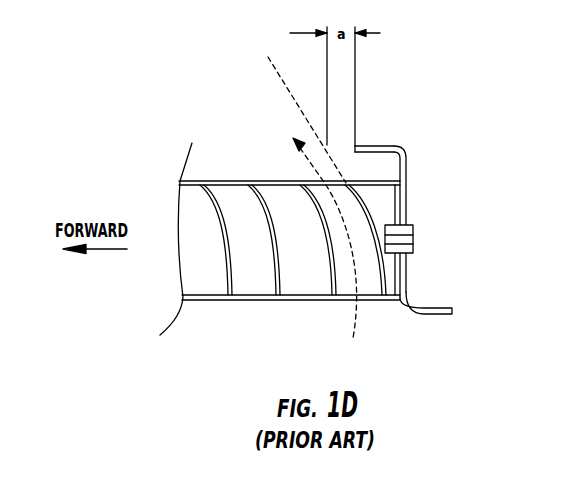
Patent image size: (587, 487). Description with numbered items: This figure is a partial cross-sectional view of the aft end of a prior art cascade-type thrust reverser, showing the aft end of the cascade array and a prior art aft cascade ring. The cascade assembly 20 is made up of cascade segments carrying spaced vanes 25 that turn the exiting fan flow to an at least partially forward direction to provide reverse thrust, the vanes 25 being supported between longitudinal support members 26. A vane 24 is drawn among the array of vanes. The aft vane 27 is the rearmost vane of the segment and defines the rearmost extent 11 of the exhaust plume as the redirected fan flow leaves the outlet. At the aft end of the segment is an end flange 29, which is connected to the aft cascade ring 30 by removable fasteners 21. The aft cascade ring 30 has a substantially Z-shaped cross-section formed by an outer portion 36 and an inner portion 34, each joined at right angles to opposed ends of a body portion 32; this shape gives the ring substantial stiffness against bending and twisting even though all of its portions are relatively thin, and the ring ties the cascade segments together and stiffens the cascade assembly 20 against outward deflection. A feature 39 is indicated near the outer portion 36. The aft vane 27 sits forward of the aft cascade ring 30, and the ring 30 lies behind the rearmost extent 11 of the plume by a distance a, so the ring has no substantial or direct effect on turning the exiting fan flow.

The rearmost extent of the exhaust plume 11 is at (281, 79).
The cascade assembly 20 is at (249, 134).
The removable fasteners 21 is at (414, 240).
The vane 24 is at (323, 252).
The vanes 25 is at (270, 264).
The longitudinal support members 26 is at (232, 200).
The aft vane 27 is at (380, 268).
The end flange 29 is at (405, 270).
The aft cascade ring 30 is at (432, 174).
The body portion 32 is at (405, 200).
The inner portion 34 is at (430, 306).
The outer portion 36 is at (372, 146).
The bracket top edge 39 is at (359, 146).